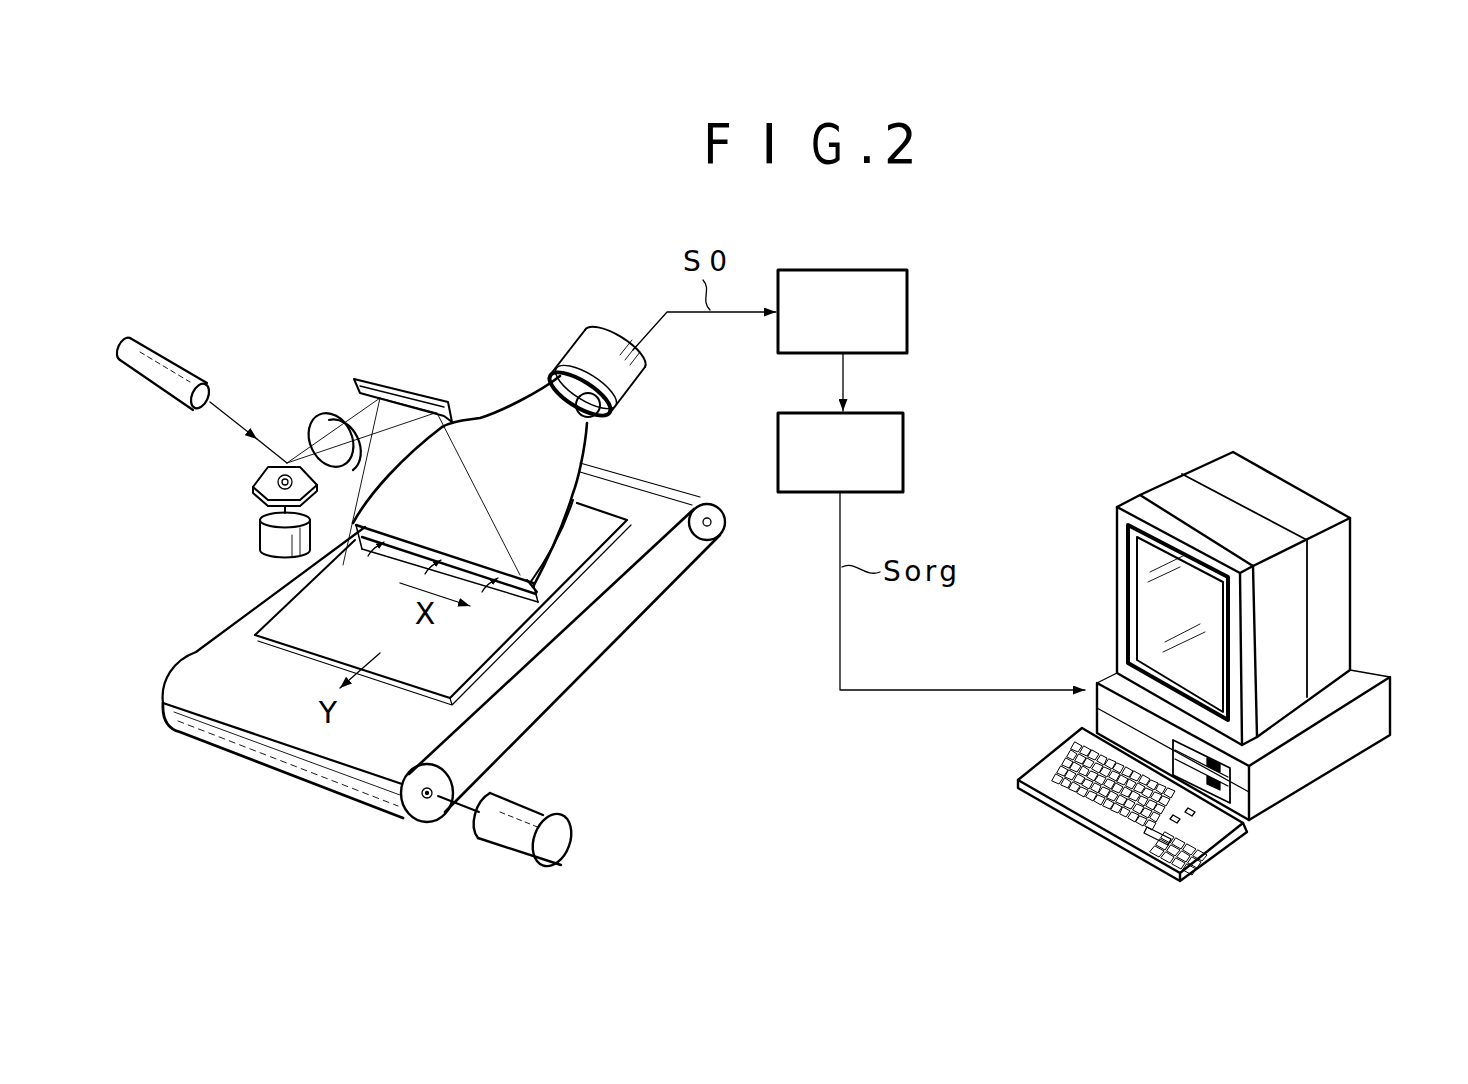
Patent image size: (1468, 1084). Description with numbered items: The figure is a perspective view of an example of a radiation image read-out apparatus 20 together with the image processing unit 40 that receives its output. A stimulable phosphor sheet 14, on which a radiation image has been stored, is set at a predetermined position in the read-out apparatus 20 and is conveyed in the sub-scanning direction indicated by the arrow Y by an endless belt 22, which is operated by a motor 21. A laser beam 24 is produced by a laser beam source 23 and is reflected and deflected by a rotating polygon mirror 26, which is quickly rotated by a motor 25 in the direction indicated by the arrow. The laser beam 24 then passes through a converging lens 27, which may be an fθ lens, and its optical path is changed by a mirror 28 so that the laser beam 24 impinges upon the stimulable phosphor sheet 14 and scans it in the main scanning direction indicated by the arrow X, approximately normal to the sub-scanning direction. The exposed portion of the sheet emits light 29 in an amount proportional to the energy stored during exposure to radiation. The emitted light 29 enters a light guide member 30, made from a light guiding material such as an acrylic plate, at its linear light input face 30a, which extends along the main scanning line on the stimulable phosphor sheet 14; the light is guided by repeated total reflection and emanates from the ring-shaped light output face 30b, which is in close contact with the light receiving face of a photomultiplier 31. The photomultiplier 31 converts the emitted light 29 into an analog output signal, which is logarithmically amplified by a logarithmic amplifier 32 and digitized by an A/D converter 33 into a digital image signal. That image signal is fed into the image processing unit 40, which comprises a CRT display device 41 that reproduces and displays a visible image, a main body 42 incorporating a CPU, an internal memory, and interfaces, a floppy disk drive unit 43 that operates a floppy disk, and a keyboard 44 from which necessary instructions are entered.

The stimulable phosphor sheet 14 is at (477, 650).
The read-out apparatus 20 is at (318, 417).
The motor 21 is at (560, 840).
The endless belt 22 is at (453, 717).
The laser beam source 23 is at (180, 375).
The laser beam 24 is at (232, 412).
The motor 25 is at (262, 543).
The rotating polygon mirror 26 is at (255, 485).
The converging lens 27 is at (317, 410).
The mirror 28 is at (420, 385).
The emitted light 29 is at (390, 540).
The light guide member 30 is at (539, 505).
The linear light input face 30a is at (533, 598).
The ring-shaped light output face 30b is at (600, 418).
The photomultiplier 31 is at (583, 345).
The logarithmic amplifier 32 is at (843, 270).
The A/D converter 33 is at (905, 440).
The image processing unit 40 is at (1213, 638).
The CRT display device 41 is at (1165, 518).
The main body 42 is at (1372, 716).
The floppy disk drive unit 43 is at (1233, 775).
The keyboard 44 is at (1035, 787).